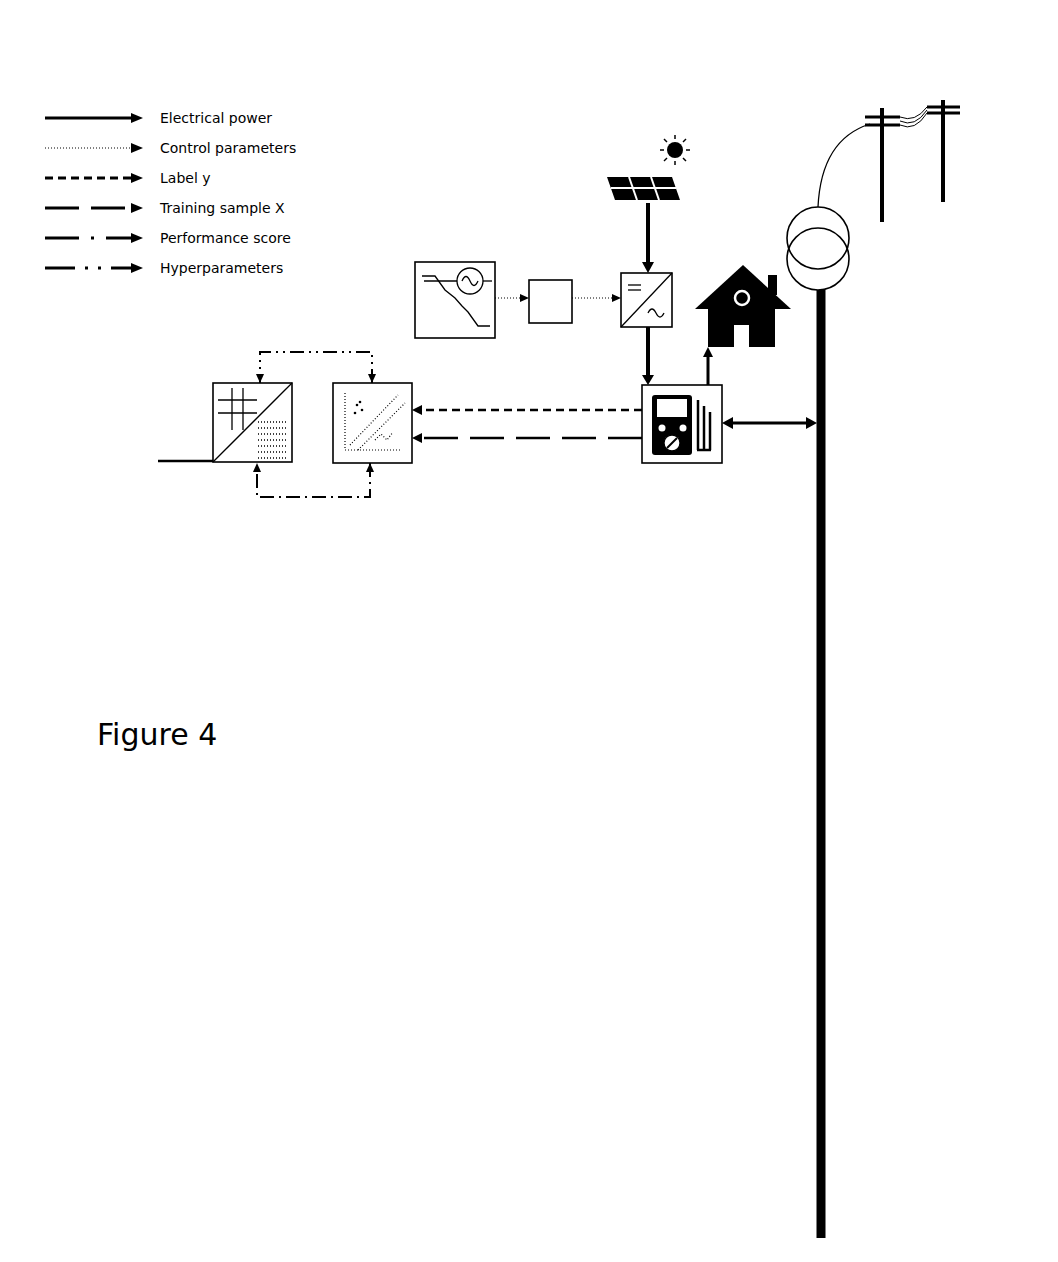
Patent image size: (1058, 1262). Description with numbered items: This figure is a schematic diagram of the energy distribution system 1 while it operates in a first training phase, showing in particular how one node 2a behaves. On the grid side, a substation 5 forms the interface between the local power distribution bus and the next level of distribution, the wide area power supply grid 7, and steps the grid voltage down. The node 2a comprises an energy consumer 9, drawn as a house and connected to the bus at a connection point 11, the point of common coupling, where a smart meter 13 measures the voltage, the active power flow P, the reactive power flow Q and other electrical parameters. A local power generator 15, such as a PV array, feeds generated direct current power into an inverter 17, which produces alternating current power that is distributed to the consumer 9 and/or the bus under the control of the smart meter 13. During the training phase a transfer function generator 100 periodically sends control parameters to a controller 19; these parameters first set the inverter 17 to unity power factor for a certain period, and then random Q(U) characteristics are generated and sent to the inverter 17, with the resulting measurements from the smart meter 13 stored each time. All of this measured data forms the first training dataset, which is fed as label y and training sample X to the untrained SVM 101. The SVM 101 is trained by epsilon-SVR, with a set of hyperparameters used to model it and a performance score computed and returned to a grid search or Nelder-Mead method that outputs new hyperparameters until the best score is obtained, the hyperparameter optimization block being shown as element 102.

The power distribution system 1 is at (446, 135).
The node 2a is at (176, 509).
The substation 5 is at (832, 280).
The wide area power supply grid 7 is at (843, 105).
The energy consumer 9 is at (727, 280).
The connection point 11 is at (768, 427).
The smart meter 13 is at (725, 447).
The local power generator 15 is at (612, 177).
The inverter 17 is at (640, 273).
The controller 19 is at (553, 280).
The transfer function generator 100 is at (444, 253).
The untrained SVM 101 is at (390, 472).
The hyperparameter optimizer 102 is at (201, 397).